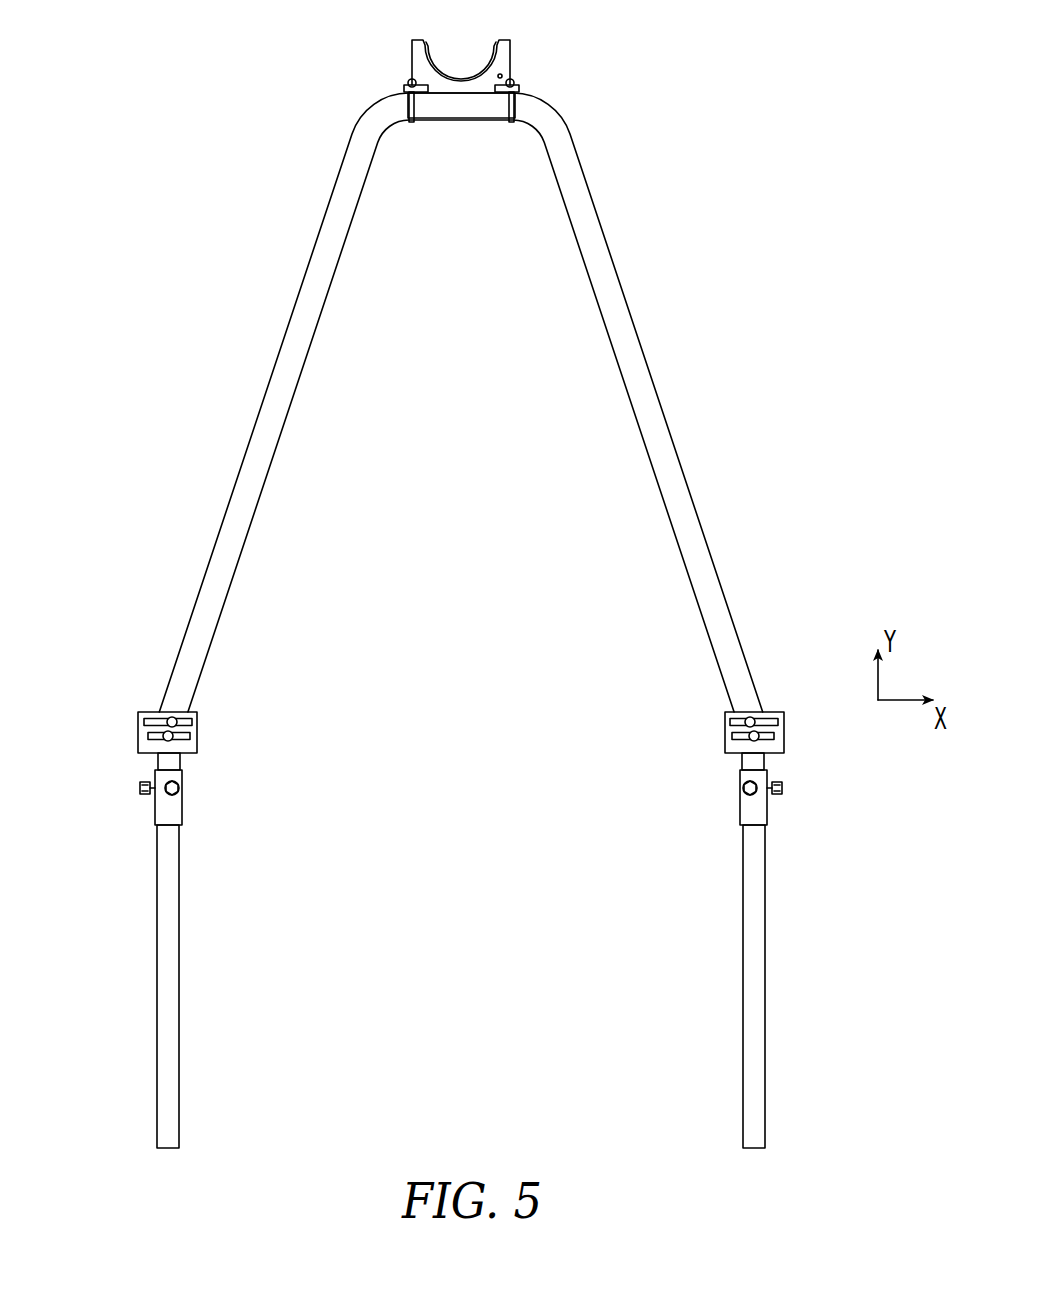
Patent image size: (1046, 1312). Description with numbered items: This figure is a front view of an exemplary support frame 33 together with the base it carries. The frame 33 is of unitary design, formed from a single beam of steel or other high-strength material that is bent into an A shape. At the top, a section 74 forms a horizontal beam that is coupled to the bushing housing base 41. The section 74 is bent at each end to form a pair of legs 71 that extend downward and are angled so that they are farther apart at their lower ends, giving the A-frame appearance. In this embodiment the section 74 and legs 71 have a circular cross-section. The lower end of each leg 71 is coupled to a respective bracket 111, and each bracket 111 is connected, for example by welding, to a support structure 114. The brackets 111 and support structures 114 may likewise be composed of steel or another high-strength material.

The support frame 33 is at (487, 402).
The bushing housing base 41 is at (511, 38).
The legs 71 is at (242, 466).
The section 74 is at (465, 107).
The bracket 111 is at (138, 742).
The support structure 114 is at (184, 851).